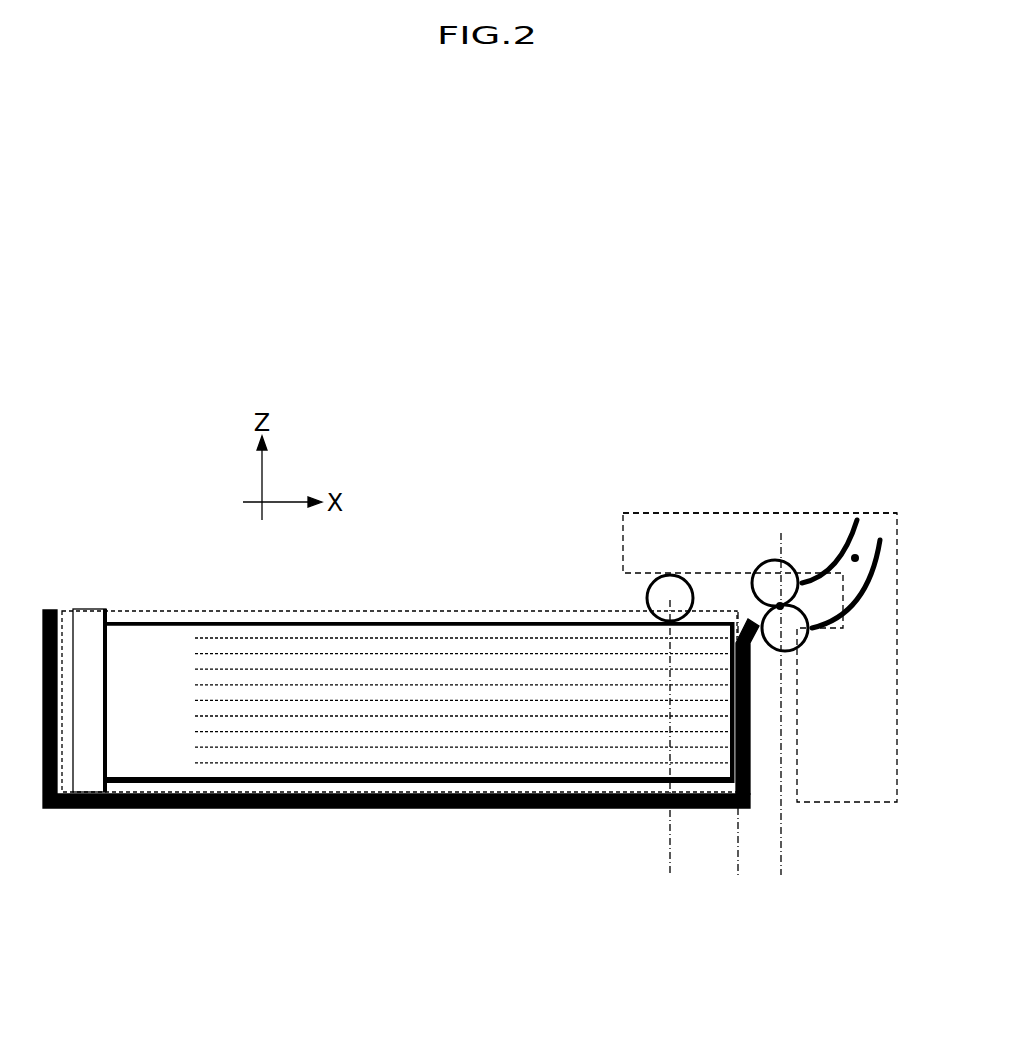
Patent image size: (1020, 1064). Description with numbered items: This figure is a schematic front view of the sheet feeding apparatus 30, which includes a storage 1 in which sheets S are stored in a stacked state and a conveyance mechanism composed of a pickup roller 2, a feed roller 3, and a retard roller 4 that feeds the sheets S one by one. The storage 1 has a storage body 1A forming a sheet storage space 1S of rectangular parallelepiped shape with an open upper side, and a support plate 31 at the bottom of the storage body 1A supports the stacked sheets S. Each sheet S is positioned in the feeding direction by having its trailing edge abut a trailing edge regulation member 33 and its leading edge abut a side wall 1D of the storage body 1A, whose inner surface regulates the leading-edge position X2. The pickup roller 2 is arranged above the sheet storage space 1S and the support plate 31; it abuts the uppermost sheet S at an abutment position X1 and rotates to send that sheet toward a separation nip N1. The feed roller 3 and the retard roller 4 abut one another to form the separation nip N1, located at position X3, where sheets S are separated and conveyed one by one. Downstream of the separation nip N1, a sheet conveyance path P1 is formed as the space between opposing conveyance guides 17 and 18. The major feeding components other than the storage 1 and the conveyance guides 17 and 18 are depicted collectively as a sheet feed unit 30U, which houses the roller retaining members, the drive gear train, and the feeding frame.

The storage 1 is at (232, 815).
The storage body 1A is at (522, 810).
The side wall 1D is at (740, 698).
The sheet storage space 1S is at (392, 610).
The sheet S is at (498, 615).
The pickup roller 2 is at (668, 575).
The feed roller 3 is at (770, 560).
The retard roller 4 is at (795, 653).
The separation nip N1 is at (780, 604).
The sheet conveyance path P1 is at (860, 553).
The conveyance guide 17 is at (860, 595).
The conveyance guide 18 is at (840, 540).
The sheet feeding apparatus 30 is at (590, 447).
The sheet feed unit 30U is at (766, 493).
The support plate 31 is at (417, 786).
The trailing edge regulation member 33 is at (97, 610).
The abutment position X1 is at (668, 756).
The leading-edge position X2 is at (737, 762).
The position of the separation nip X3 is at (781, 722).